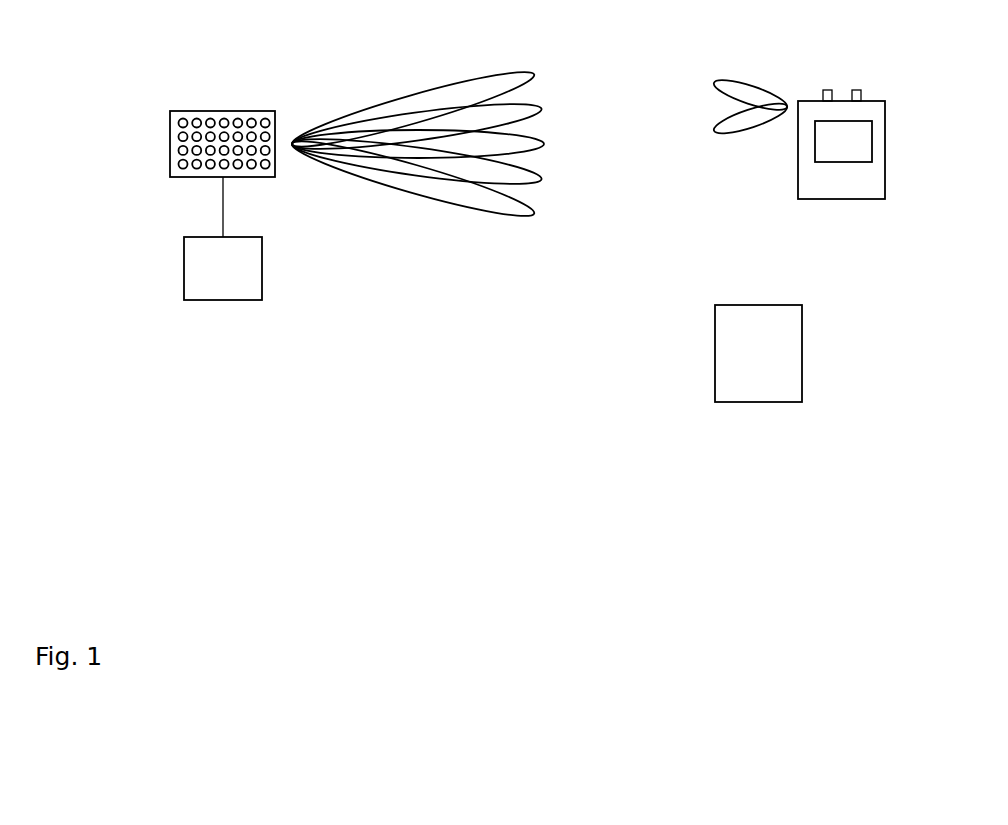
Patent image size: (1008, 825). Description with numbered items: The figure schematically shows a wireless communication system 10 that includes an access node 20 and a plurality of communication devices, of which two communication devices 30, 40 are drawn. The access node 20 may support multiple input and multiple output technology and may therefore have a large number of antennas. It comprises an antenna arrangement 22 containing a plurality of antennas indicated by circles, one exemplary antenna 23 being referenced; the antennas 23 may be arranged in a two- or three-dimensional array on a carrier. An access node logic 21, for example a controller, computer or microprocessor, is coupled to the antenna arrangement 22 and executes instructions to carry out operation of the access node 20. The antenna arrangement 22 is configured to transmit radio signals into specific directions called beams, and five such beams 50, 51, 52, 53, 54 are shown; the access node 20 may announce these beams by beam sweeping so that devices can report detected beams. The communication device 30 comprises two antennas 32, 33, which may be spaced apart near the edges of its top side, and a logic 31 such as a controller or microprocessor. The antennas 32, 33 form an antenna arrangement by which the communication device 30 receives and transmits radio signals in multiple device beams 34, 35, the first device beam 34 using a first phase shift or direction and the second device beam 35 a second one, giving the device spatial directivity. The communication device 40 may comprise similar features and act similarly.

The wireless communication system 10 is at (643, 532).
The access node 20 is at (150, 234).
The access node logic 21 is at (236, 284).
The antenna arrangement 22 is at (169, 168).
The antenna 23 is at (180, 123).
The communication device 30 is at (855, 202).
The logic 31 is at (856, 153).
The antenna 32 is at (825, 87).
The antenna 33 is at (857, 87).
The device beam 34 is at (723, 77).
The device beam 35 is at (728, 140).
The communication device 40 is at (773, 405).
The beam 50 is at (507, 70).
The beam 51 is at (533, 103).
The beam 52 is at (535, 157).
The beam 53 is at (528, 185).
The beam 54 is at (510, 220).